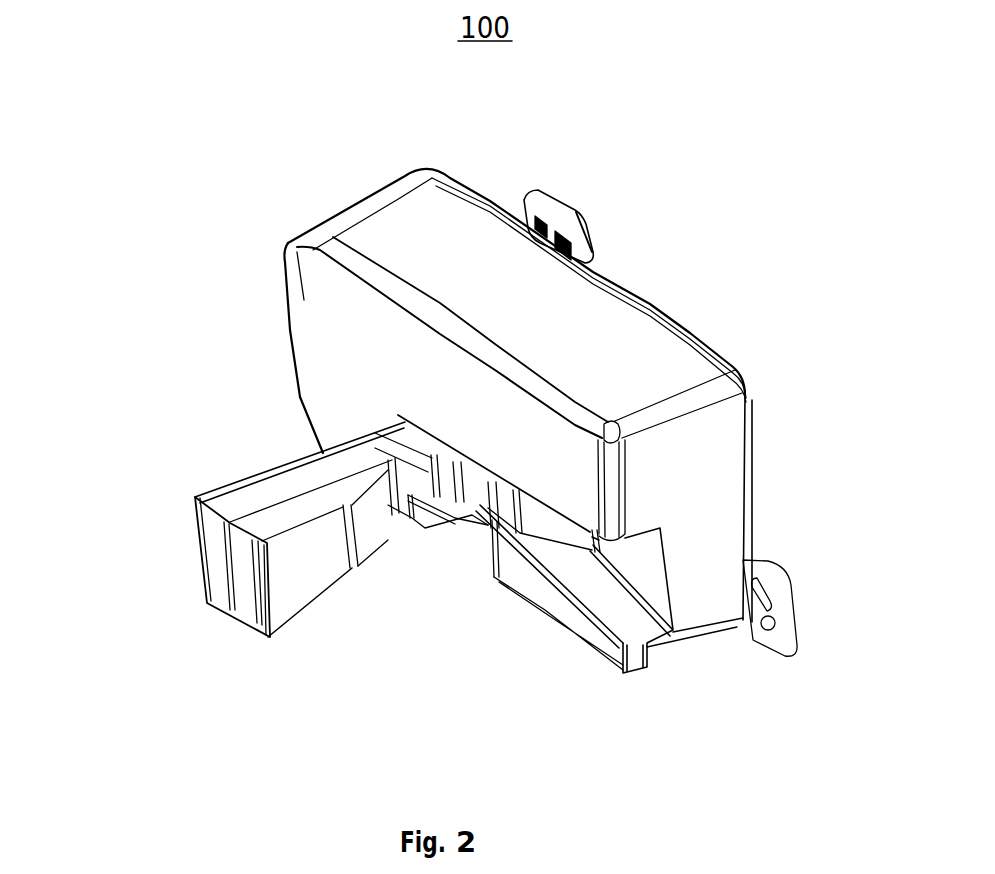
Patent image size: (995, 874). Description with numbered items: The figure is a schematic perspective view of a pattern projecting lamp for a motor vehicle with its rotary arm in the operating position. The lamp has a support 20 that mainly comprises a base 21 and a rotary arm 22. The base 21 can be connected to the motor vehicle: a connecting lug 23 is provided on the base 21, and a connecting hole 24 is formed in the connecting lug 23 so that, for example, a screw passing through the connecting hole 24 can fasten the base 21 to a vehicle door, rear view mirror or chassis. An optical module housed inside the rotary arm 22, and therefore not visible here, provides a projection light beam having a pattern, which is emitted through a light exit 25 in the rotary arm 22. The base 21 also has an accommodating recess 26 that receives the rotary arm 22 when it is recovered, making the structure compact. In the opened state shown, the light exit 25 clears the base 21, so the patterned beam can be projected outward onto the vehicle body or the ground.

The support 20 is at (243, 333).
The base 21 is at (657, 370).
The rotary arm 22 is at (213, 548).
The connecting lug 23 is at (557, 208).
The connecting hole 24 is at (542, 226).
The light exit 25 is at (300, 587).
The accommodating recess 26 is at (670, 580).